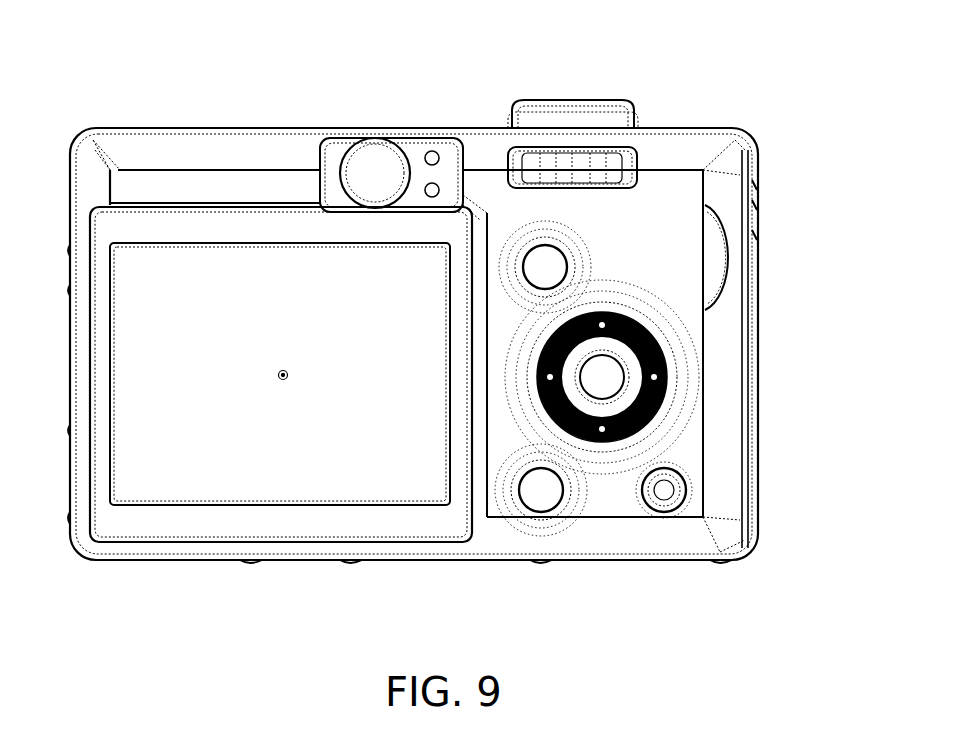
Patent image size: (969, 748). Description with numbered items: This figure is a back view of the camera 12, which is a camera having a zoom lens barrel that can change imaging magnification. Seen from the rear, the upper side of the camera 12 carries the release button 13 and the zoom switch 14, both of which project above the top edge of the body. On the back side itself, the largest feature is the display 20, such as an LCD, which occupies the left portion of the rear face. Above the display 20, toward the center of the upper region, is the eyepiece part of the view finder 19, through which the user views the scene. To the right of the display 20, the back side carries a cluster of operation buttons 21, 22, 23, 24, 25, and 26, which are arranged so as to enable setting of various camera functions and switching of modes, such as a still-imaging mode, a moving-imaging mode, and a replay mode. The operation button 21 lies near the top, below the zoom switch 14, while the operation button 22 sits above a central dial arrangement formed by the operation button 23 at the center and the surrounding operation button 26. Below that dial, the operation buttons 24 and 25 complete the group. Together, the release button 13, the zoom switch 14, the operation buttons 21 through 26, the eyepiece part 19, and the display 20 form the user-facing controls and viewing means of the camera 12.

The camera 12 is at (200, 150).
The release button 13 is at (566, 100).
The zoom switch 14 is at (590, 125).
The eyepiece part of the view finder 19 is at (365, 175).
The display 20 is at (212, 475).
The operation button 21 is at (595, 172).
The operation button 22 is at (545, 268).
The operation button 23 is at (602, 378).
The operation button 24 is at (541, 492).
The operation button 25 is at (663, 492).
The operation button 26 is at (668, 392).